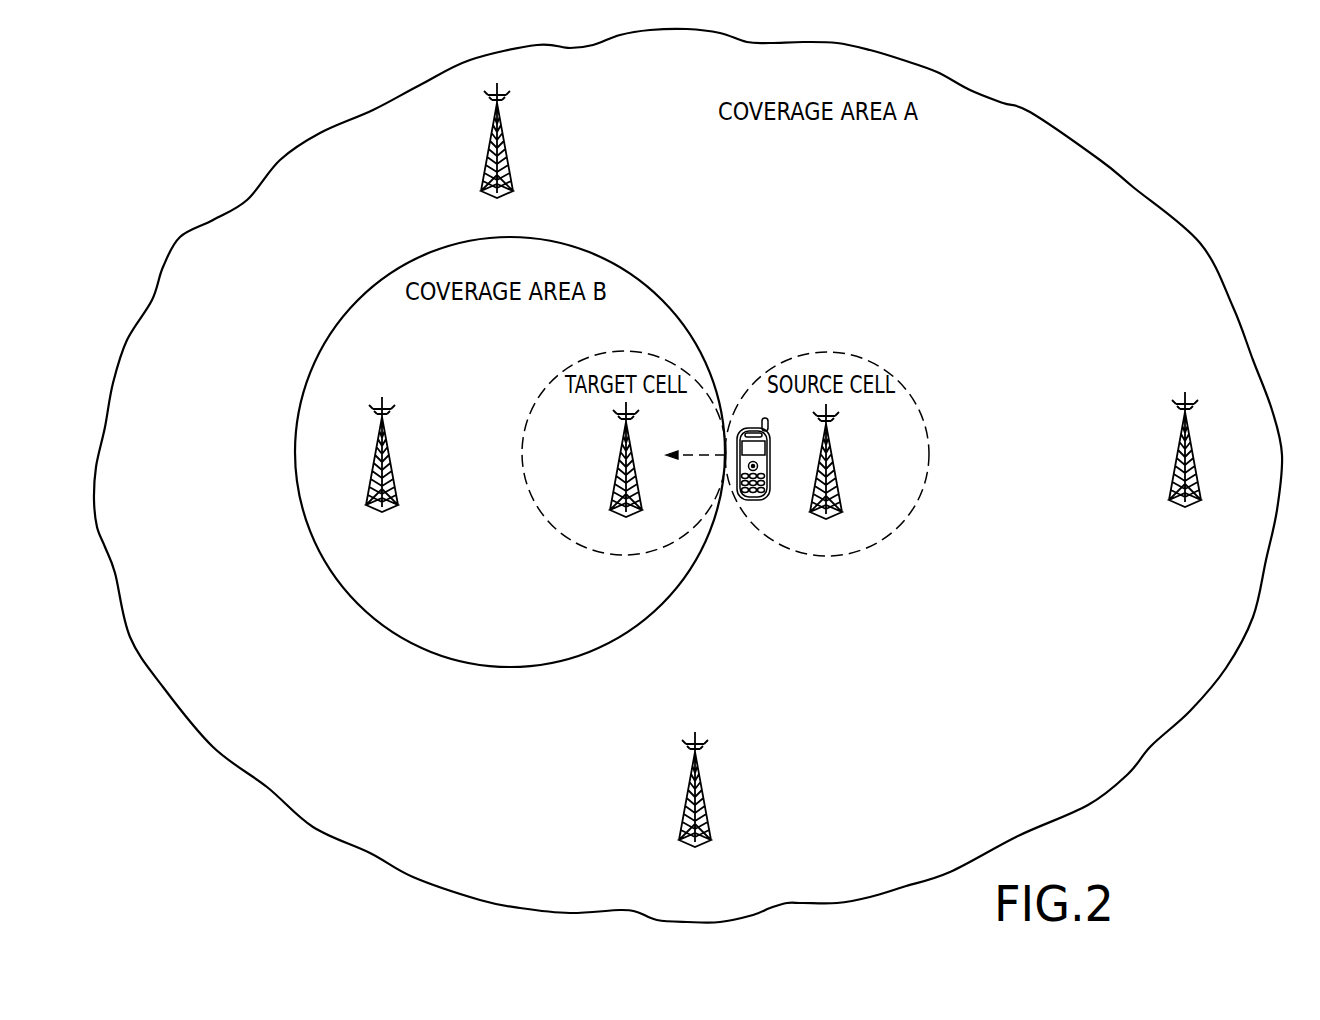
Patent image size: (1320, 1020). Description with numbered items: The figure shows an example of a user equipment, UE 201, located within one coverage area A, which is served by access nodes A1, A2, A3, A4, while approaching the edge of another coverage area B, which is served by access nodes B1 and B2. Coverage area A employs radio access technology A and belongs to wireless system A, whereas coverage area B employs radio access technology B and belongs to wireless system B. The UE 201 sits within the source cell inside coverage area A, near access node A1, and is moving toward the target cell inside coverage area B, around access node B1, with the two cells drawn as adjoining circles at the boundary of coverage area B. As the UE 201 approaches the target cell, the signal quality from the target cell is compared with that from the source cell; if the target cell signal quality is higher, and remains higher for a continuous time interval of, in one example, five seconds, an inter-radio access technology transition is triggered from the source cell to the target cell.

The access node A1 is at (826, 475).
The access node A2 is at (1185, 466).
The access node A3 is at (497, 152).
The access node A4 is at (695, 803).
The access node B1 is at (626, 473).
The access node B2 is at (382, 469).
The user equipment (UE) 201 is at (750, 500).